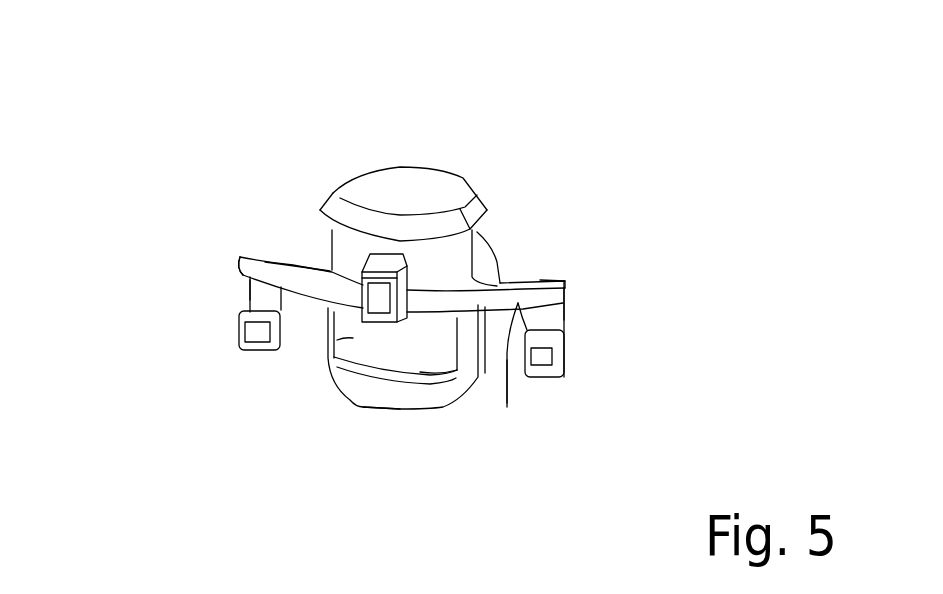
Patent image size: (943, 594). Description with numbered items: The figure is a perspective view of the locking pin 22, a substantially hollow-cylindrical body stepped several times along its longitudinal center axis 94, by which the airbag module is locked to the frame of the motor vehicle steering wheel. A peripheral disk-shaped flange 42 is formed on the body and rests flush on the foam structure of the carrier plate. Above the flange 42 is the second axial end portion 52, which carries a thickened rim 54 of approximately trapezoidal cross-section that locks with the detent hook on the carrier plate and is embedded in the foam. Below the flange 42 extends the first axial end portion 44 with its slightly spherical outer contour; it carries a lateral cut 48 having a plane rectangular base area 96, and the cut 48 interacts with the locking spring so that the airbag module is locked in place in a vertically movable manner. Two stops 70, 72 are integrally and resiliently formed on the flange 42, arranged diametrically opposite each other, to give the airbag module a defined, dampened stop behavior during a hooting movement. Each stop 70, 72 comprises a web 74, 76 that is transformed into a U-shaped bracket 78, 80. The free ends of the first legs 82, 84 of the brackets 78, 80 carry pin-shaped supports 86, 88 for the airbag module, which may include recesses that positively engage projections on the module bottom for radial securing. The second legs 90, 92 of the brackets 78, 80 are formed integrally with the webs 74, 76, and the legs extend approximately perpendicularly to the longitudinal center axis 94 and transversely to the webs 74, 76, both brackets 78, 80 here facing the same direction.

The locking pin 22 is at (602, 147).
The flange 42 is at (498, 297).
The first axial end portion 44 is at (470, 403).
The cut 48 is at (327, 310).
The second axial end portion 52 is at (443, 157).
The thickened rim 54 is at (345, 218).
The stop 70 is at (545, 397).
The stop 72 is at (238, 365).
The web 74 is at (507, 407).
The web 76 is at (295, 265).
The U-shaped bracket 78 is at (572, 315).
The U-shaped bracket 80 is at (238, 297).
The first leg 82 is at (563, 336).
The first leg 84 is at (237, 313).
The support 86 is at (560, 377).
The support 88 is at (257, 343).
The second leg 90 is at (550, 277).
The second leg 92 is at (258, 258).
The longitudinal center axis 94 is at (400, 450).
The plane rectangular base area 96 is at (427, 347).